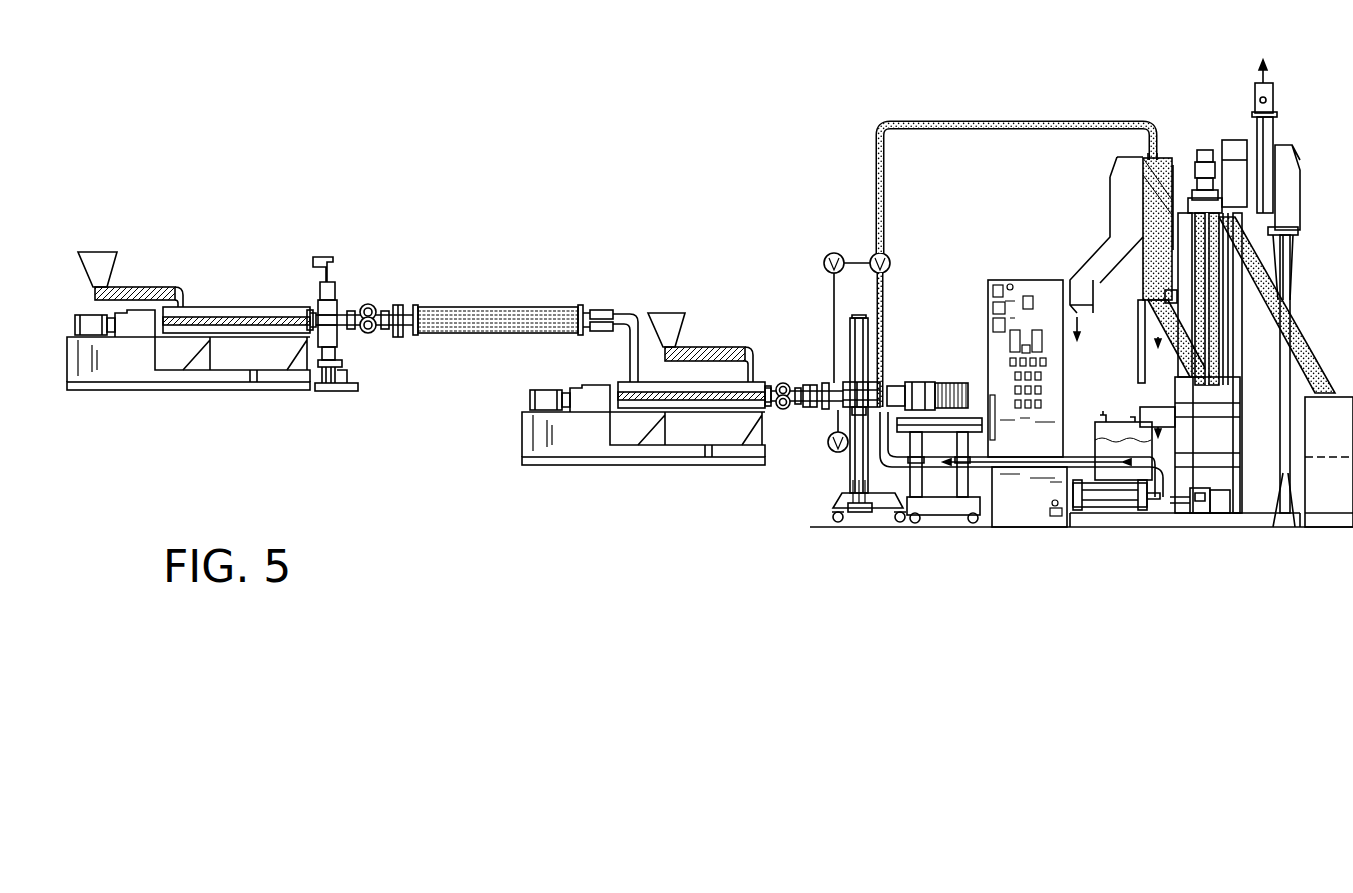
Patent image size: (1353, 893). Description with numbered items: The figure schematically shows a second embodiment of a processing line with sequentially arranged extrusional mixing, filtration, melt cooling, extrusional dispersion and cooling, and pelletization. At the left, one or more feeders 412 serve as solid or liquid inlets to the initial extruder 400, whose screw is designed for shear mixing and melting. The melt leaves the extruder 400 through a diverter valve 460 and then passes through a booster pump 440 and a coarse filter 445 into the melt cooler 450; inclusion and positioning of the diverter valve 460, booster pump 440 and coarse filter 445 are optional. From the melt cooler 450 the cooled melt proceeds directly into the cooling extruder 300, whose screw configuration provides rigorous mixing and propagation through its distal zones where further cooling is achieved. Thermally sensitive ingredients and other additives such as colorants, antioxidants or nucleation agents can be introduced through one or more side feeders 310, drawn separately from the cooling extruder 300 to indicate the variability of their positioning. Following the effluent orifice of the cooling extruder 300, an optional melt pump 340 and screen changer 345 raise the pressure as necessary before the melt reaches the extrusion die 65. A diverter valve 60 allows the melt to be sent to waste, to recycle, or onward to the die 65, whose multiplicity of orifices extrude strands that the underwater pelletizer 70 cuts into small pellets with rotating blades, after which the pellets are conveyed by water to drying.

The initial extruder 400 is at (228, 365).
The feeders 412 is at (97, 265).
The booster pump 440 is at (372, 300).
The coarse filter 445 is at (397, 337).
The melt cooler 450 is at (493, 305).
The diverter valve 460 is at (332, 392).
The cooling extruder 300 is at (683, 432).
The side feeder 310 is at (700, 345).
The melt pump 340 is at (780, 384).
The screen changer 345 is at (808, 380).
The extrusion die 65 is at (873, 355).
The underwater pelletizer 70 is at (962, 383).
The diverter valve 60 is at (826, 504).